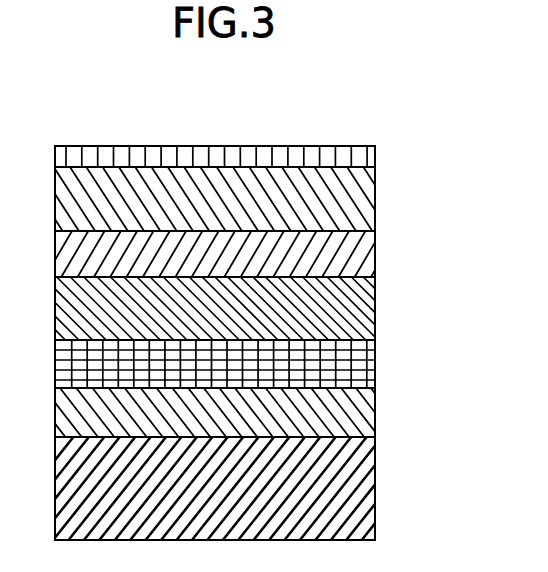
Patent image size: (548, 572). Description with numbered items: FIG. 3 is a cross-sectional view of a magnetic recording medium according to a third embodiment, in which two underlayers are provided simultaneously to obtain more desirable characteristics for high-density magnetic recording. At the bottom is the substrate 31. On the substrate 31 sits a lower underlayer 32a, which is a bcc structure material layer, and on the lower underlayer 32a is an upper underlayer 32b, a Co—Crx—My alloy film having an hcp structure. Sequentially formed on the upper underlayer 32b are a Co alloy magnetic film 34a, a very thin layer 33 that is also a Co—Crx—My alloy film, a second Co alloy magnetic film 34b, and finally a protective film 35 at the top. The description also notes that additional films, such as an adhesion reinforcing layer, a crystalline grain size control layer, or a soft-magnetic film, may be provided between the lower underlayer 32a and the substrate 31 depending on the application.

The substrate 31 is at (365, 496).
The lower underlayer 32a is at (365, 417).
The upper underlayer 32b is at (365, 368).
The very thin layer 33 is at (362, 258).
The Co alloy magnetic film 34a is at (365, 310).
The Co alloy magnetic film 34b is at (367, 207).
The protective film 35 is at (368, 158).